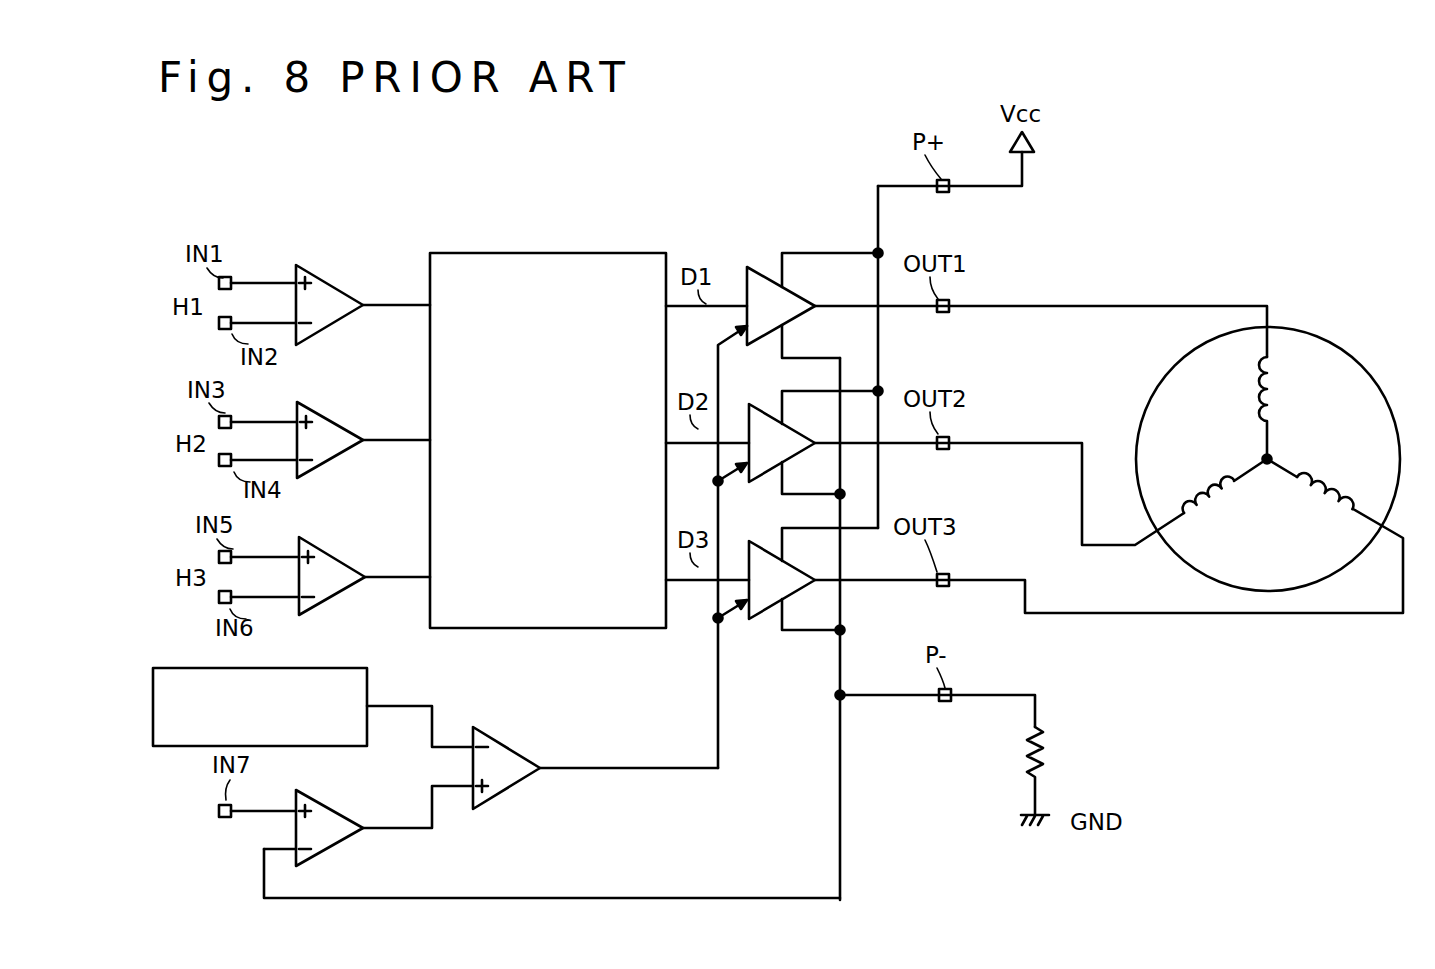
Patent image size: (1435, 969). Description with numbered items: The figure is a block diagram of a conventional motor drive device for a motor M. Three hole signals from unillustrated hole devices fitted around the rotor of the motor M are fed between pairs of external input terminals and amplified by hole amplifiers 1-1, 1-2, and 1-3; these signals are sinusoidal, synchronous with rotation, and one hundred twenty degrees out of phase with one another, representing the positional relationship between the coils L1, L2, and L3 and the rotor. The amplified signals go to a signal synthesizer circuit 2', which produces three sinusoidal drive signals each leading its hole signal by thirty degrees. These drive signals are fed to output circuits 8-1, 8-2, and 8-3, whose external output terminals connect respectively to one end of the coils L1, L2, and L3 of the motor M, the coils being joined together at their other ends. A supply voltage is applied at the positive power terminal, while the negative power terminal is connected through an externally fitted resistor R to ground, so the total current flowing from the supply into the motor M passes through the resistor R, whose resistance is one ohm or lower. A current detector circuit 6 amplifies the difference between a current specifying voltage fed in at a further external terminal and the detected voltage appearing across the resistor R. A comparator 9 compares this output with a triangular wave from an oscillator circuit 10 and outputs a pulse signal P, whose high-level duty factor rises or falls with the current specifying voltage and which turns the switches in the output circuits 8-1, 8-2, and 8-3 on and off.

The hole amplifier 1-1 is at (340, 292).
The hole amplifier 1-2 is at (342, 429).
The hole amplifier 1-3 is at (342, 565).
The signal synthesizer circuit 2' is at (548, 414).
The output circuit 8-1 is at (764, 268).
The output circuit 8-2 is at (764, 407).
The output circuit 8-3 is at (764, 545).
The current detector circuit 6 is at (336, 829).
The comparator 9 is at (510, 750).
The oscillator circuit 10 is at (340, 667).
The motor M is at (1268, 452).
The coil L1 is at (1283, 393).
The coil L2 is at (1194, 489).
The coil L3 is at (1336, 474).
The resistor R is at (1048, 752).
The pulse signal P is at (720, 724).